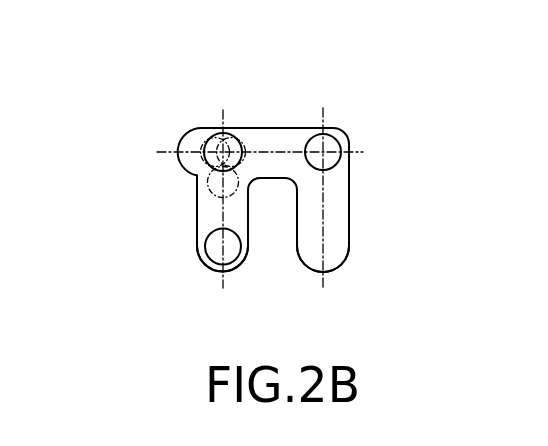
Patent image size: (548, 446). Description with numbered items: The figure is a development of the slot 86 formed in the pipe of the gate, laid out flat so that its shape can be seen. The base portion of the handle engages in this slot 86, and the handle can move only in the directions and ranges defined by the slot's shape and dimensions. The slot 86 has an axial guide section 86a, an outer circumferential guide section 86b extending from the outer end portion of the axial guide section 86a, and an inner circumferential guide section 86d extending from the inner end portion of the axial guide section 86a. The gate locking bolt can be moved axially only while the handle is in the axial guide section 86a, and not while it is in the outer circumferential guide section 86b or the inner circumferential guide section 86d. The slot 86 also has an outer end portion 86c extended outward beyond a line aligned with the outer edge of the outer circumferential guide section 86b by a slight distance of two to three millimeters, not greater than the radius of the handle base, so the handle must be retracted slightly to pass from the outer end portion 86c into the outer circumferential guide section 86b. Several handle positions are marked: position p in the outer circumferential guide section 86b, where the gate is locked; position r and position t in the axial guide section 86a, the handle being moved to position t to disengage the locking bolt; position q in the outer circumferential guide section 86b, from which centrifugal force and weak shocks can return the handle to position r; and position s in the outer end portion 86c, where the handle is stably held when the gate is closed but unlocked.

The slot 86 is at (205, 103).
The axial guide section 86a is at (285, 150).
The outer circumferential guide section 86b is at (210, 220).
The outer end portion 86c is at (178, 166).
The inner circumferential guide section 86d is at (328, 237).
The position s is at (183, 127).
The position t is at (340, 130).
The position r is at (240, 145).
The position q is at (243, 200).
The position p is at (210, 270).